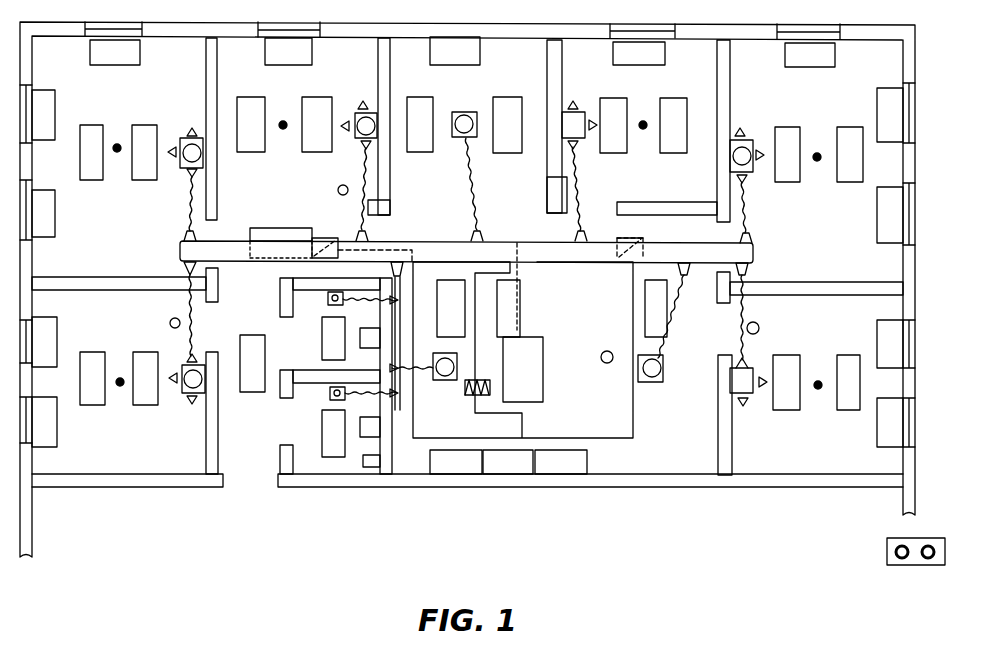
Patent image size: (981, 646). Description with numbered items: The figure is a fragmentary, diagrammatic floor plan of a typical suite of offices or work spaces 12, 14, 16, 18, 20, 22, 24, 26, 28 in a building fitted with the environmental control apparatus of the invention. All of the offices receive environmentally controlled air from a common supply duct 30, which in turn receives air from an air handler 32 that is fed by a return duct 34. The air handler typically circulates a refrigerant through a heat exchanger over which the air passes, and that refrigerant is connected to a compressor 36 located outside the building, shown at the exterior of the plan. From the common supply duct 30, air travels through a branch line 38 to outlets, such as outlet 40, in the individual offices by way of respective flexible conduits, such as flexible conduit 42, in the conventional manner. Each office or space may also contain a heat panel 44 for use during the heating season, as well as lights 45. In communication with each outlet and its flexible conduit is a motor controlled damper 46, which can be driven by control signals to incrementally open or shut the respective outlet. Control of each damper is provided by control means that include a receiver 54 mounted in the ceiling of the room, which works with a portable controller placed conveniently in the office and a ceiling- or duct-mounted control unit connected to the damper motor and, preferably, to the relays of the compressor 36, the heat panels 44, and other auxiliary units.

The office 12 is at (98, 243).
The office 14 is at (286, 203).
The office 16 is at (511, 210).
The office 18 is at (676, 190).
The office 20 is at (831, 240).
The office 22 is at (132, 453).
The office 24 is at (266, 435).
The office 26 is at (699, 418).
The office 28 is at (826, 453).
The common supply duct 30 is at (527, 290).
The air handler 32 is at (538, 390).
The return duct 34 is at (485, 406).
The compressor 36 is at (893, 567).
The branch line 38 is at (520, 245).
The outlet 40 is at (180, 137).
The flexible conduit 42 is at (190, 208).
The heat panel 44 is at (613, 63).
The lights 45 is at (133, 125).
The motor controlled damper 46 is at (185, 228).
The receiver 54 is at (117, 152).